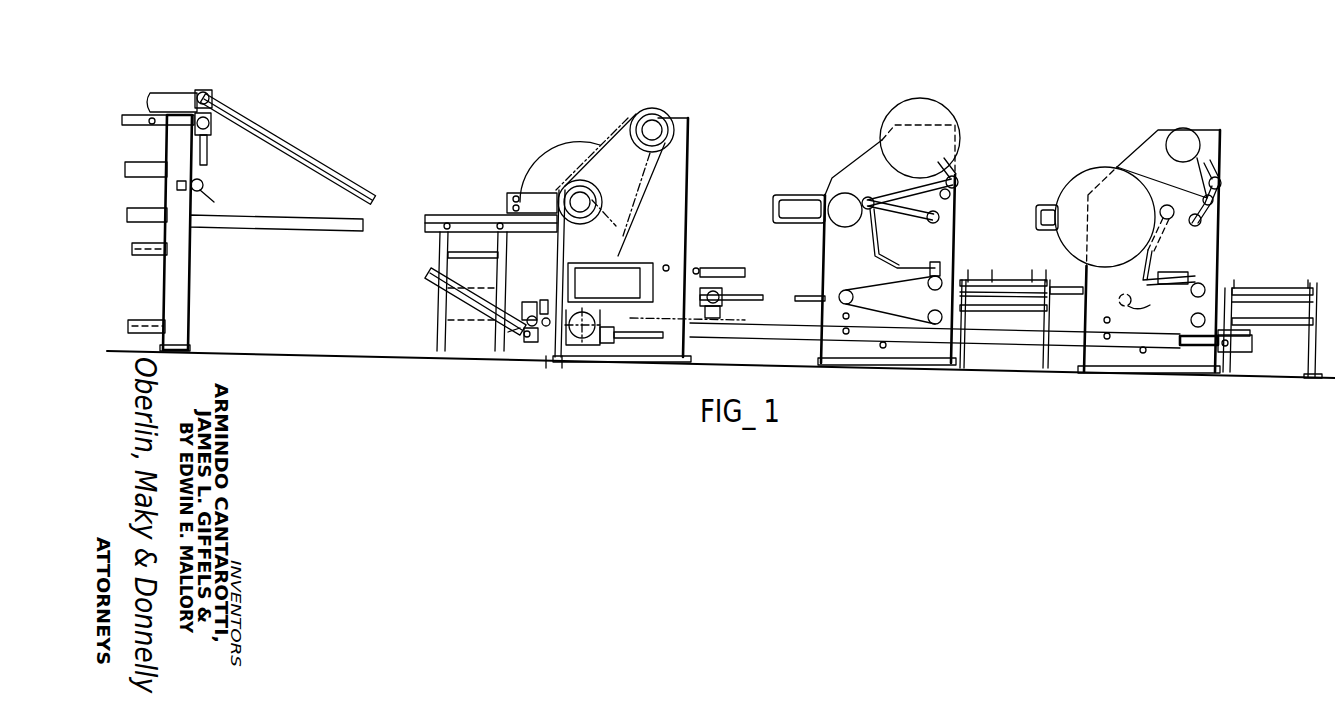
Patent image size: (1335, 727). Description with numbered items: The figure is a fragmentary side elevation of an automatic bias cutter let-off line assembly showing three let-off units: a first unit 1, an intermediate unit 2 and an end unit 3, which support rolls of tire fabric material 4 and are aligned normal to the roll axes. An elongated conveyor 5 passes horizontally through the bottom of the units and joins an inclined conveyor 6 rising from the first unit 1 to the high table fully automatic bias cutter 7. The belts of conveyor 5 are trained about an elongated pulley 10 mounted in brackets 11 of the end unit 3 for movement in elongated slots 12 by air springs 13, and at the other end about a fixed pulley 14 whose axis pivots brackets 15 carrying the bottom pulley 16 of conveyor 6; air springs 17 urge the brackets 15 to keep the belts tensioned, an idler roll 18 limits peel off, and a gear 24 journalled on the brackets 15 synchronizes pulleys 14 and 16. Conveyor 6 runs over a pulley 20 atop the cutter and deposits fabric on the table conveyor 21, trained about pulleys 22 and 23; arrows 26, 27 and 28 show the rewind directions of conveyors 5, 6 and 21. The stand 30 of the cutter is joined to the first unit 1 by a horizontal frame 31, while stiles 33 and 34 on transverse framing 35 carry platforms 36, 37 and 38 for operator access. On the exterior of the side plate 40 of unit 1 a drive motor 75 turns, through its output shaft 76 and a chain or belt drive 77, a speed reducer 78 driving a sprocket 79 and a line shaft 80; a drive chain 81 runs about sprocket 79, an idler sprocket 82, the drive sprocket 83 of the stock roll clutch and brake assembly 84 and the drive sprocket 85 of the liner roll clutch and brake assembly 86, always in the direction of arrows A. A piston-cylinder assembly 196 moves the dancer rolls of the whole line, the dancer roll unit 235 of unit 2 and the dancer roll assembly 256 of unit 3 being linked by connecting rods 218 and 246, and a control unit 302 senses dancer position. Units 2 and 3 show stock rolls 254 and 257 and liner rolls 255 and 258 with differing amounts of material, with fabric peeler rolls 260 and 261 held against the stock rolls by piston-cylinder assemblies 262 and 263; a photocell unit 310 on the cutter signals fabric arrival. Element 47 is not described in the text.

The first let-off unit 1 is at (802, 245).
The intermediate let-off unit 2 is at (892, 224).
The end let-off unit 3 is at (1152, 252).
The rolls of tire fabric material 4 is at (548, 146).
The elongated conveyor 5 is at (810, 321).
The inclined conveyor 6 is at (352, 172).
The high table fully automatic bias cutter 7 is at (239, 192).
The elongated pulley 10 is at (1236, 353).
The brackets 11 is at (1255, 344).
The elongated slots 12 is at (1252, 348).
The air springs 13 is at (1193, 348).
The fixed pulley 14 is at (546, 370).
The brackets 15 is at (562, 370).
The bottom pulley 16 is at (530, 350).
The air springs 17 is at (542, 311).
The idler roll 18 is at (506, 336).
The pulley 20 is at (214, 95).
The table conveyor 21 is at (212, 185).
The pulley 22 is at (205, 190).
The pulley 23 is at (213, 128).
The gear 24 is at (523, 336).
The arrow 26 is at (990, 320).
The arrow 27 is at (300, 135).
The arrow 28 is at (137, 103).
The stand 30 is at (190, 262).
The horizontal frame 31 is at (305, 232).
The stile 33 is at (1025, 320).
The stile 34 is at (1297, 369).
The transverse framing 35 is at (1066, 296).
The platform 36 is at (727, 270).
The platform 37 is at (1018, 283).
The platform 38 is at (1270, 330).
The side plate 40 is at (686, 206).
The box 47 is at (505, 204).
The drive motor 75 is at (638, 266).
The output shaft 76 is at (566, 268).
The chain or belt drive 77 is at (610, 282).
The speed reducer 78 is at (604, 360).
The sprocket 79 is at (606, 324).
The line shaft 80 is at (634, 362).
The drive chain 81 is at (640, 222).
The idler sprocket 82 is at (532, 204).
The drive sprocket 83 is at (588, 192).
The clutch and brake assembly 84 is at (601, 206).
The drive sprocket 85 is at (650, 162).
The clutch and brake assembly 86 is at (660, 113).
The piston-cylinder assembly 196 is at (538, 288).
The connecting rod 218 is at (745, 297).
The dancer roll unit 235 is at (852, 297).
The connecting rods 246 is at (990, 284).
The stock roll 254 is at (842, 193).
The liner roll 255 is at (946, 108).
The dancer roll assembly 256 is at (1150, 305).
The stock roll 257 is at (1066, 186).
The liner roll 258 is at (1186, 128).
The fabric peeler roll 260 is at (870, 200).
The fabric peeler roll 261 is at (1160, 213).
The piston-cylinder assembly 262 is at (903, 270).
The piston-cylinder assembly 263 is at (1187, 276).
The control unit 302 is at (722, 306).
The photocell unit 310 is at (178, 90).
The arrows A is at (627, 231).